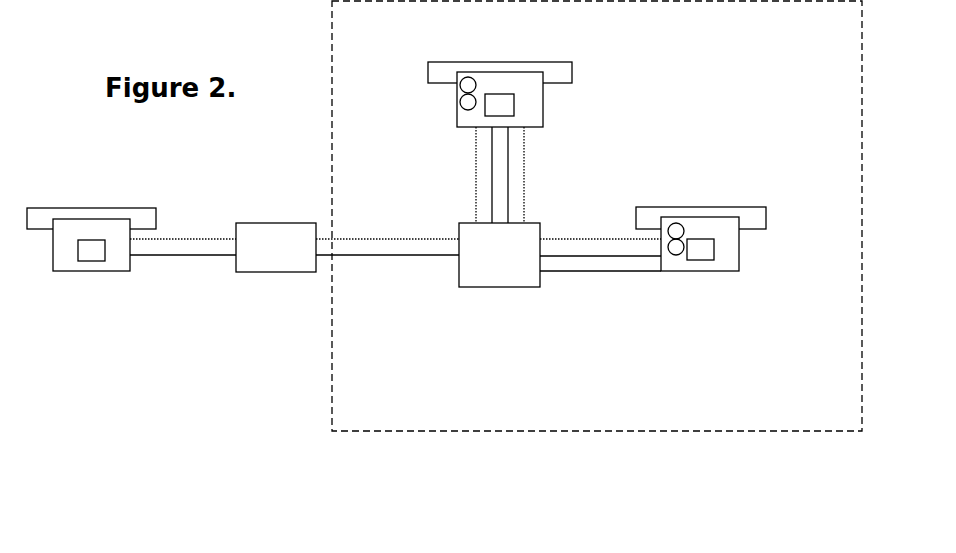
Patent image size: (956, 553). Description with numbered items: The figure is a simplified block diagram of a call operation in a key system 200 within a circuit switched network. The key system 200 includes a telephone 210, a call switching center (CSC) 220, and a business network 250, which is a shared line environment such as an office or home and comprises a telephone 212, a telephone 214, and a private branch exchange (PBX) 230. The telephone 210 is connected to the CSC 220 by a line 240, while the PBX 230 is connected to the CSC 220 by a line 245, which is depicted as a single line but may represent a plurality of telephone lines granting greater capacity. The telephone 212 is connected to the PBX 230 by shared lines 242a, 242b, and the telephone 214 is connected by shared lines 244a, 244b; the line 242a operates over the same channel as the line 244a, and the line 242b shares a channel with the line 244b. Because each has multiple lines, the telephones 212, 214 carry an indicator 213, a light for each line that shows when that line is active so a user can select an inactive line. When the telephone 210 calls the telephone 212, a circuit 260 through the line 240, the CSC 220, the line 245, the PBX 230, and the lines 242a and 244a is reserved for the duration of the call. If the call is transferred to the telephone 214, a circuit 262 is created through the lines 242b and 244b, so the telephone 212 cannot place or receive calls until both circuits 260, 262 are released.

The key system 200 is at (278, 468).
The telephone 210 is at (92, 271).
The telephone 212 is at (508, 62).
The indicator 213 is at (458, 95).
The telephone 214 is at (733, 205).
The call switching center (CSC) 220 is at (284, 272).
The private branch exchange (PBX) 230 is at (476, 287).
The line 240 is at (188, 255).
The shared line 242a is at (492, 158).
The shared line 242b is at (508, 174).
The shared line 244a is at (620, 256).
The shared line 244b is at (572, 271).
The line 245 is at (397, 255).
The business network 250 is at (700, 398).
The circuit 260 is at (477, 190).
The circuit 262 is at (525, 207).